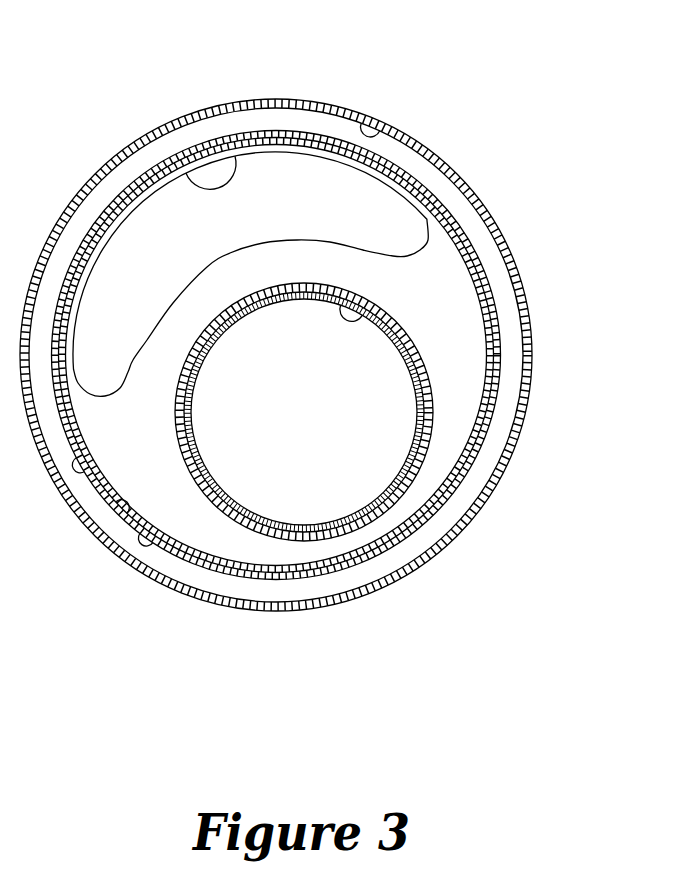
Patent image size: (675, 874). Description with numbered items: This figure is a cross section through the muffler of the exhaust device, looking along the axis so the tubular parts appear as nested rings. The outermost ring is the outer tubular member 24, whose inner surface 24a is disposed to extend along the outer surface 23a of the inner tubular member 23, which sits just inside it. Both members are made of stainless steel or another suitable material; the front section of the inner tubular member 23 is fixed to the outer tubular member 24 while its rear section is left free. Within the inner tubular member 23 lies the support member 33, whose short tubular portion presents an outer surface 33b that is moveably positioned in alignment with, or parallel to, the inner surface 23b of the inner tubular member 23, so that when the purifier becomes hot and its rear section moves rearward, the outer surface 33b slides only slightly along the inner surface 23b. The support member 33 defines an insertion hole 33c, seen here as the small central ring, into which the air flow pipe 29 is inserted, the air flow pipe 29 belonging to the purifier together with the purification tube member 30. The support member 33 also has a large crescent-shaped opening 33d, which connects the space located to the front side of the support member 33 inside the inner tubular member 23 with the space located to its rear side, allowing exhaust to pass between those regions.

The inner tubular member 23 is at (443, 508).
The outer surface of the inner tubular member 23a is at (90, 470).
The inner surface of the inner tubular member 23b is at (122, 520).
The outer tubular member 24 is at (450, 167).
The inner surface of the outer tubular member 24a is at (378, 120).
The air flow pipe 29 is at (432, 400).
The purification tube member 30 is at (417, 387).
The support member 33 is at (490, 359).
The outer surface of the short tubular member 33b is at (158, 530).
The insertion hole 33c is at (362, 312).
The opening 33d is at (237, 157).